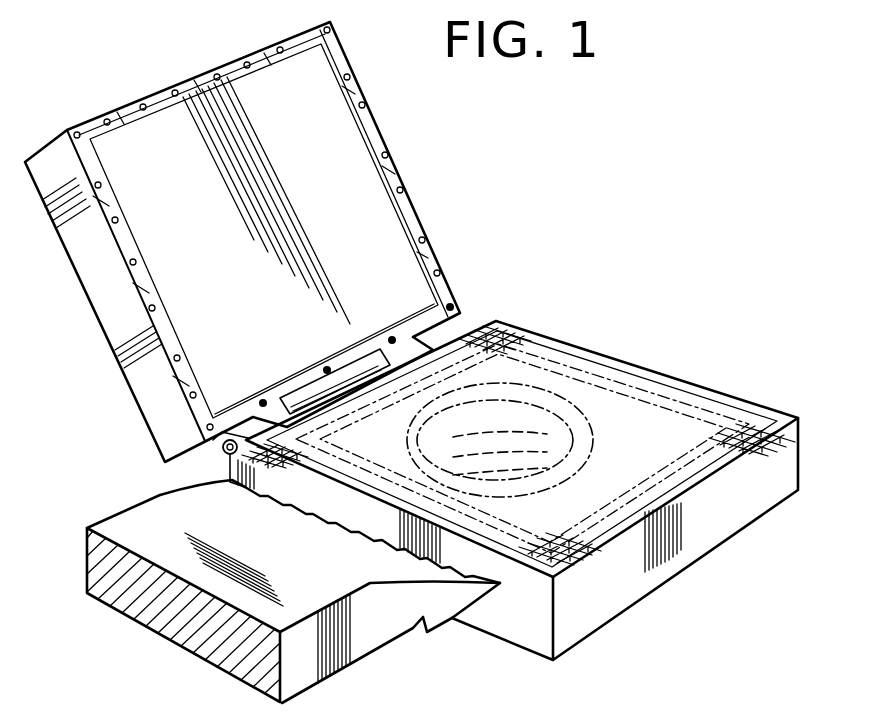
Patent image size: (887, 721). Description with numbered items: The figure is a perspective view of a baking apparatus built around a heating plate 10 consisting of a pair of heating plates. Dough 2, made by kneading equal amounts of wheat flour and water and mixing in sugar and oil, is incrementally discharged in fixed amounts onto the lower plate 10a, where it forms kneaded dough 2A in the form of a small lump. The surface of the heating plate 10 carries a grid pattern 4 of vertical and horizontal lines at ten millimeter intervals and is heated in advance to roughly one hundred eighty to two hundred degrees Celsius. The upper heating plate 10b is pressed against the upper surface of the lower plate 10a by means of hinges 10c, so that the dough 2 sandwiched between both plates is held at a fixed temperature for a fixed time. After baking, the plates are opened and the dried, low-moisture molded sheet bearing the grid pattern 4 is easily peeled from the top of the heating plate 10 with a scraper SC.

The heating plate 10 is at (584, 338).
The lower plate 10a is at (707, 522).
The heating plate 10b is at (429, 214).
The hinges 10c is at (215, 457).
The grid pattern 4 is at (470, 330).
The kneaded dough 2A is at (705, 441).
The dough 2 is at (495, 440).
The scraper SC is at (380, 633).